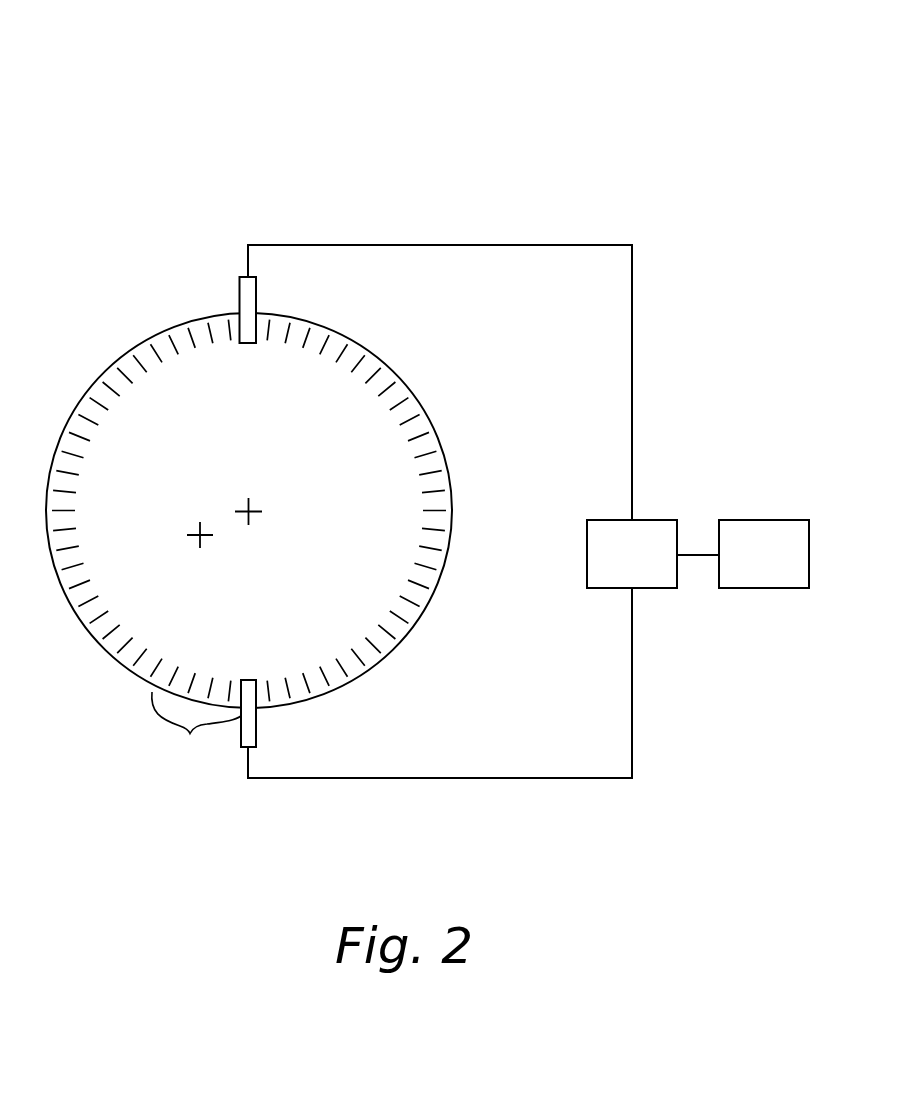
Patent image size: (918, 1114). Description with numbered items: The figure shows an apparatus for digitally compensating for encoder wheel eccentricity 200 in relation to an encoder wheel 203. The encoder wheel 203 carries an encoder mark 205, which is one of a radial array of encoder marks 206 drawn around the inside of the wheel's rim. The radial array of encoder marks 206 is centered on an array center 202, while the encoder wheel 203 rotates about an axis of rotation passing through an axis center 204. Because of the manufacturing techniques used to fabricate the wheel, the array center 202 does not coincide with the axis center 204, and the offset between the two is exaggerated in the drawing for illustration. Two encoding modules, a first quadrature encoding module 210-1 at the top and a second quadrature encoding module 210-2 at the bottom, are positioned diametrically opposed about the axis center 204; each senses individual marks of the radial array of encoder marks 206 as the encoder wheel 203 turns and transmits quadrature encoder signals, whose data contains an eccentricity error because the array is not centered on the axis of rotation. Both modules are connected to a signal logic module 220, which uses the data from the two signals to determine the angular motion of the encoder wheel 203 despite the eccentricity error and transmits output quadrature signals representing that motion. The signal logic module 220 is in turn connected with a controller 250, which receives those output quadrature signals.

The apparatus for digitally compensating for encoder wheel eccentricity 200 is at (106, 117).
The array center 202 is at (196, 533).
The encoder wheel 203 is at (47, 513).
The axis center 204 is at (252, 508).
The encoder mark 205 is at (170, 688).
The radial array of encoder marks 206 is at (196, 726).
The first quadrature encoding module 210-1 is at (256, 281).
The second quadrature encoding module 210-2 is at (257, 723).
The signal logic module 220 is at (658, 518).
The controller 250 is at (790, 518).